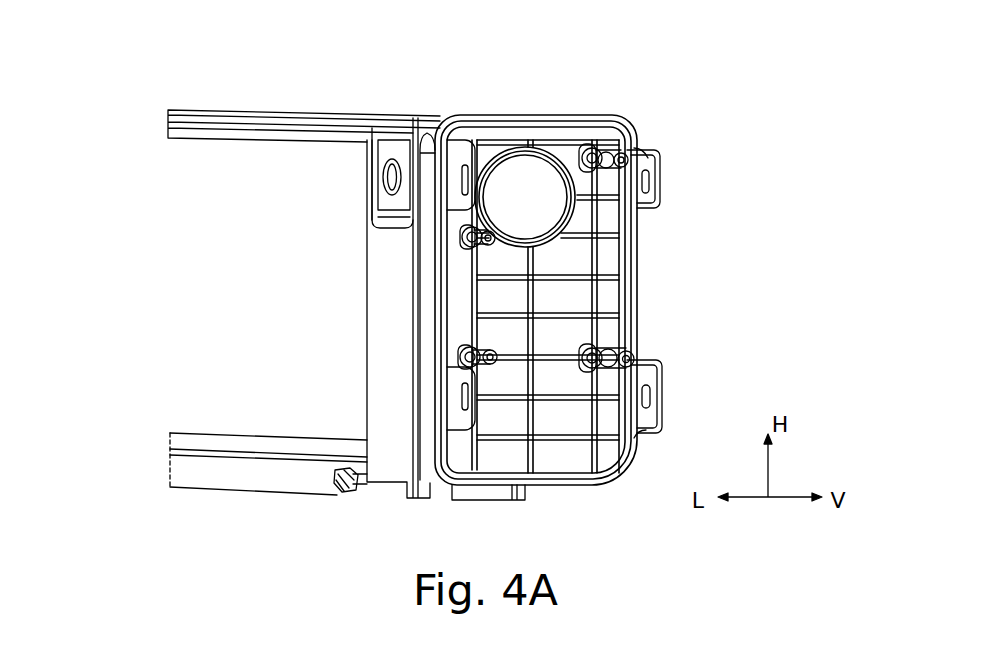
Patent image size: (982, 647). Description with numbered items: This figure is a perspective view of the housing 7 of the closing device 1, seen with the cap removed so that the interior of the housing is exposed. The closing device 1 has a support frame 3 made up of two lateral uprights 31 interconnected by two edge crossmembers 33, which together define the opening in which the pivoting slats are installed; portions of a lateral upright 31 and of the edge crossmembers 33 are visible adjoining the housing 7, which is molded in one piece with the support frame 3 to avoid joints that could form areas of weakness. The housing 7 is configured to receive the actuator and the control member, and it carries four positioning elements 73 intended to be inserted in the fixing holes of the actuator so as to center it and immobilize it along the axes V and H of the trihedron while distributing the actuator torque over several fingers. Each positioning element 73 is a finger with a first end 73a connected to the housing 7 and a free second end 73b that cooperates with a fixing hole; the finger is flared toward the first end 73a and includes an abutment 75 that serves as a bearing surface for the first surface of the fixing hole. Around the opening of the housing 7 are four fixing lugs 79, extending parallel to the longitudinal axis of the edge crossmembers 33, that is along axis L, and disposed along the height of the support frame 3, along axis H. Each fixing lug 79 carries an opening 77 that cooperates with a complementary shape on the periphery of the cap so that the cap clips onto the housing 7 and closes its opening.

The closing device 1 is at (808, 50).
The support frame 3 is at (255, 104).
The housing 7 is at (534, 106).
The lateral upright 31 is at (390, 458).
The edge crossmember 33 is at (168, 128).
The positioning element 73 is at (617, 148).
The first end 73a is at (582, 148).
The second end 73b is at (660, 157).
The abutment 75 is at (603, 142).
The opening 77 is at (657, 188).
The fixing lug 79 is at (646, 164).